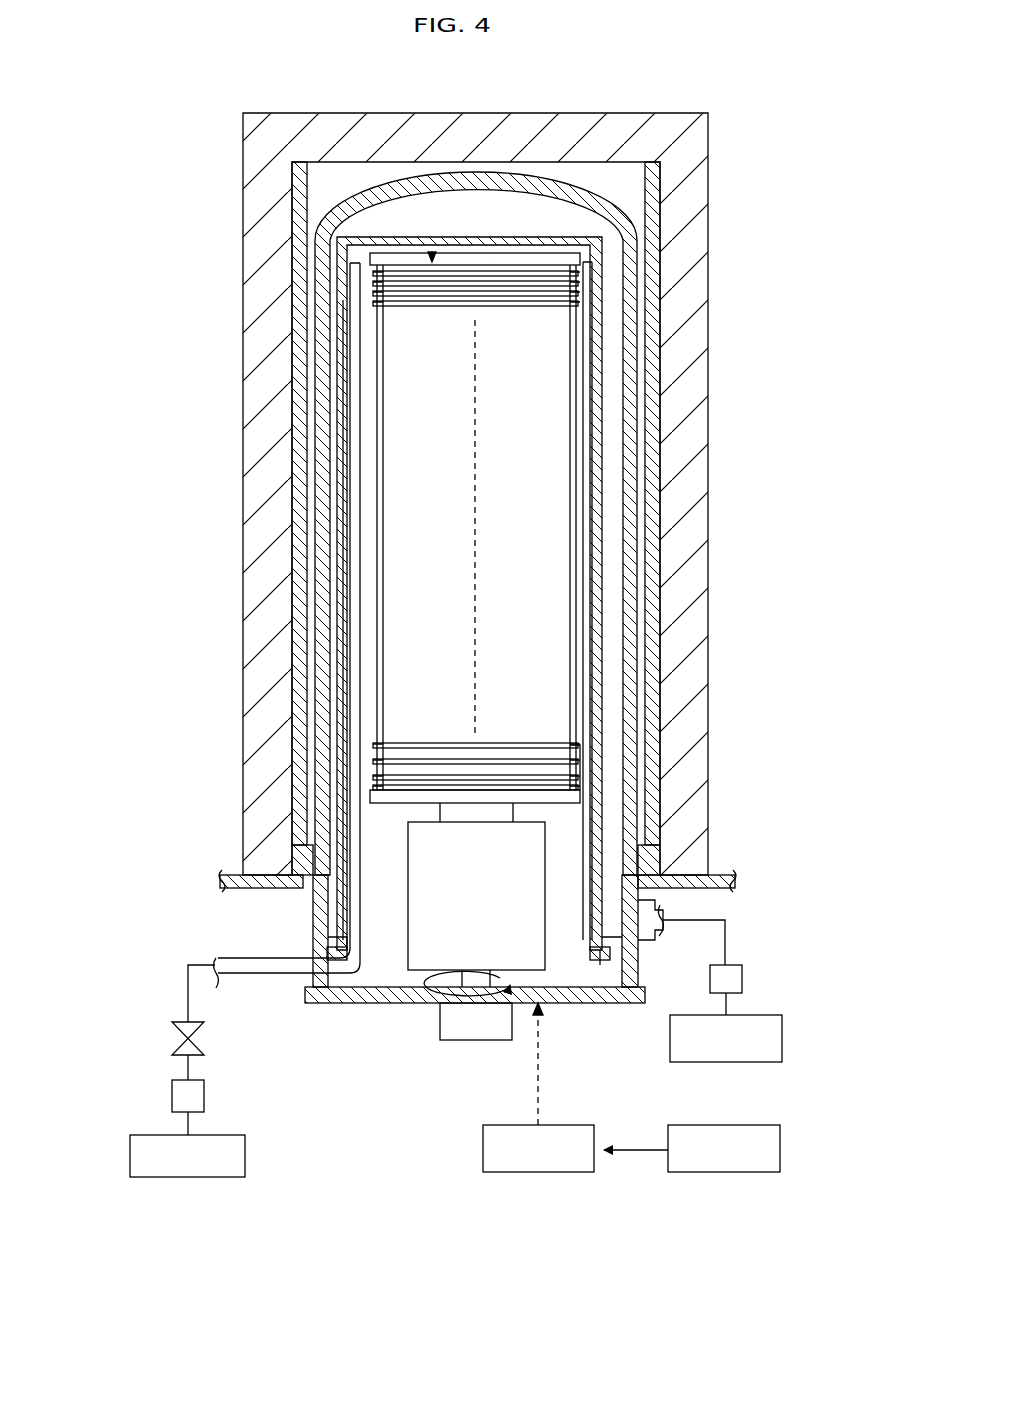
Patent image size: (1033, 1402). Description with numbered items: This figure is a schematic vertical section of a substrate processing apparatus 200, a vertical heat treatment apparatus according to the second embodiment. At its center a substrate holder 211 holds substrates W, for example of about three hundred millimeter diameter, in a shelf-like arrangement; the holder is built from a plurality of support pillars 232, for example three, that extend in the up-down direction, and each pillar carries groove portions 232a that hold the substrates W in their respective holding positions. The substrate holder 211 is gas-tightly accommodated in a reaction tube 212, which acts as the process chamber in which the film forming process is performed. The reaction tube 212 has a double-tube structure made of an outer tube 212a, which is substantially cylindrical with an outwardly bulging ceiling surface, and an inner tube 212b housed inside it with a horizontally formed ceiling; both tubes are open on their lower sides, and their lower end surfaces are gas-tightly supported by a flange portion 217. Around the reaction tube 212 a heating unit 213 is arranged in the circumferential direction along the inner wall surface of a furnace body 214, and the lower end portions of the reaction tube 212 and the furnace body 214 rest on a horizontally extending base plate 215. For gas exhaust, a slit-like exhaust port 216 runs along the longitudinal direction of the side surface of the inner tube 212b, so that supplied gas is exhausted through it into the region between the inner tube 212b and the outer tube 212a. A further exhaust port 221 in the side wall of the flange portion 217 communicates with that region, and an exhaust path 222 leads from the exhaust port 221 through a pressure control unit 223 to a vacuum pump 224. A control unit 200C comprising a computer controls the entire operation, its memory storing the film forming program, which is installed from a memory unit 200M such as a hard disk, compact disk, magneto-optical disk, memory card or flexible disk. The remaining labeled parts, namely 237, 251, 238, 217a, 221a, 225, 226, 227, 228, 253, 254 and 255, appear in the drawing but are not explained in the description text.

The substrate processing apparatus 200 is at (160, 73).
The substrate holder 211 is at (432, 255).
The process chamber 237 is at (494, 258).
The substrates W is at (538, 262).
The heating unit 213 is at (630, 190).
The furnace body 214 is at (708, 190).
The inner tube 212b is at (630, 245).
The outer tube 212a is at (602, 272).
The reaction tube 212 is at (790, 227).
The temperature sensor 251 is at (355, 295).
The exhaust port 216 is at (600, 416).
The support pillars 232 is at (365, 612).
The groove portions 232a is at (575, 745).
The gas nozzle 238 is at (345, 852).
The base plate 215 is at (700, 880).
The flange portion 217 is at (315, 928).
The seal cap 217a is at (548, 1005).
The exhaust port 221 is at (600, 965).
The exhaust port 221a is at (662, 940).
The exhaust path 222 is at (726, 940).
The pressure control unit 223 is at (742, 978).
The vacuum pump 224 is at (782, 1037).
The gas supply pipe 225 is at (345, 975).
The heat insulating member 226 is at (408, 960).
The rotation mechanism 227 is at (478, 1040).
The rotation shaft 228 is at (438, 988).
The valve 253 is at (185, 1038).
The mass flow controller 254 is at (172, 1097).
The gas supply source 255 is at (130, 1157).
The control unit 200C is at (538, 1116).
The memory unit 200M is at (692, 1177).